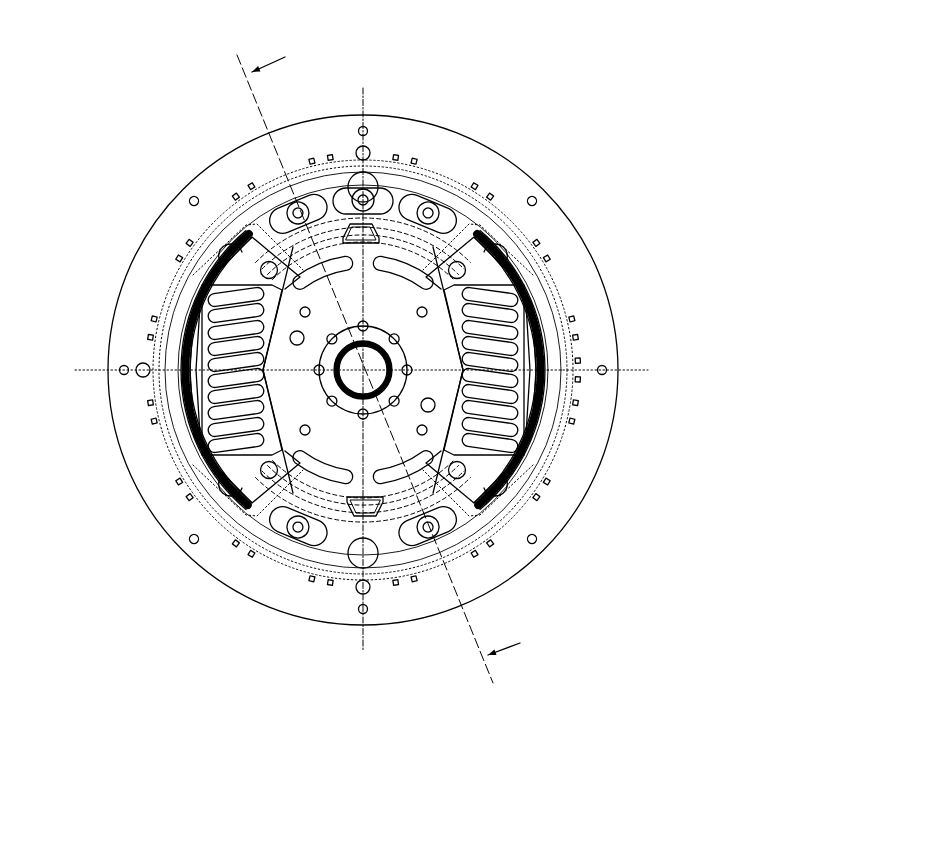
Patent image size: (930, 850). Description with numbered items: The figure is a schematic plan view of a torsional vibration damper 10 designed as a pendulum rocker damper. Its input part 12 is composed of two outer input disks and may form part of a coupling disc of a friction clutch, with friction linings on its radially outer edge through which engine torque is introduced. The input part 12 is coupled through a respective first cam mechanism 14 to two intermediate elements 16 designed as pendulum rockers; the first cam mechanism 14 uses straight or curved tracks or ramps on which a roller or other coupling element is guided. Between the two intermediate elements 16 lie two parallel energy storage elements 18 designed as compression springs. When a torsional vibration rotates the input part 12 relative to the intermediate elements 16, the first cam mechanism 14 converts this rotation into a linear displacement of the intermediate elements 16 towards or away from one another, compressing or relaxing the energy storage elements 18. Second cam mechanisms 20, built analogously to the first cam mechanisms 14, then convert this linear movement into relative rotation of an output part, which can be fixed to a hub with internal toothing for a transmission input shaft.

The torsional vibration damper 10 is at (372, 373).
The input part 12 is at (363, 368).
The first cam mechanism 14 is at (382, 395).
The intermediate element 16 is at (418, 351).
The energy storage element 18 is at (372, 370).
The second cam mechanism 20 is at (363, 389).